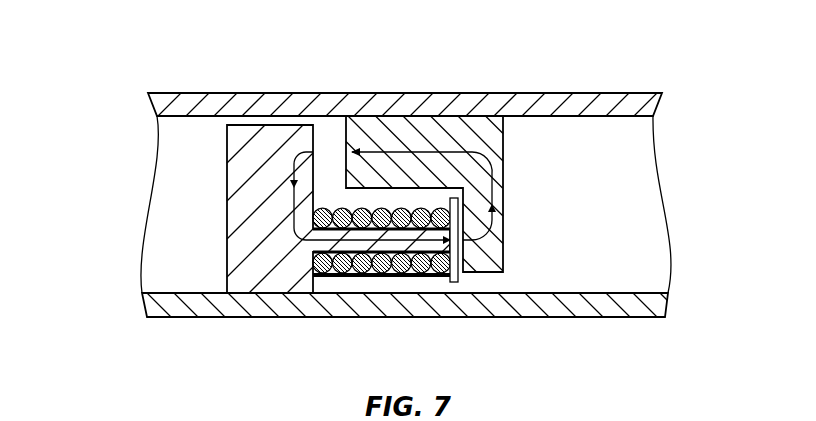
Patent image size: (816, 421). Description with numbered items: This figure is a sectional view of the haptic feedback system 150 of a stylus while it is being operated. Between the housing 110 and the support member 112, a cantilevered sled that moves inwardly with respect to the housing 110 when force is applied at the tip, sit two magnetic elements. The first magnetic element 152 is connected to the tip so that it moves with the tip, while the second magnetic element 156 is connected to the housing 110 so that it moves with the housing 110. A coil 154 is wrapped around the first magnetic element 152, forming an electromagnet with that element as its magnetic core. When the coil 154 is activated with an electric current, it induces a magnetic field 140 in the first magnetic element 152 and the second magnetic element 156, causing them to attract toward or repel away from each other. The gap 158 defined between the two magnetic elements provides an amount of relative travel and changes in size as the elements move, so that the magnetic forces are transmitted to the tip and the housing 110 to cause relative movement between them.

The housing 110 is at (215, 92).
The support member 112 is at (202, 318).
The magnetic field 140 is at (487, 167).
The haptic feedback system 150 is at (89, 123).
The first magnetic element 152 is at (285, 273).
The coil 154 is at (393, 275).
The second magnetic element 156 is at (450, 142).
The gap 158 is at (460, 282).